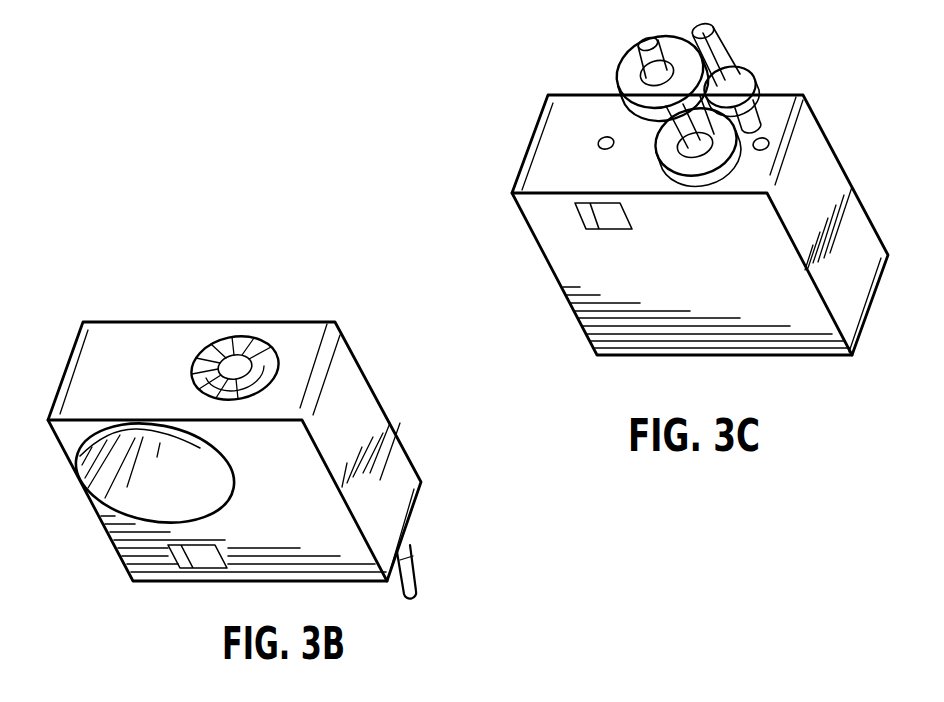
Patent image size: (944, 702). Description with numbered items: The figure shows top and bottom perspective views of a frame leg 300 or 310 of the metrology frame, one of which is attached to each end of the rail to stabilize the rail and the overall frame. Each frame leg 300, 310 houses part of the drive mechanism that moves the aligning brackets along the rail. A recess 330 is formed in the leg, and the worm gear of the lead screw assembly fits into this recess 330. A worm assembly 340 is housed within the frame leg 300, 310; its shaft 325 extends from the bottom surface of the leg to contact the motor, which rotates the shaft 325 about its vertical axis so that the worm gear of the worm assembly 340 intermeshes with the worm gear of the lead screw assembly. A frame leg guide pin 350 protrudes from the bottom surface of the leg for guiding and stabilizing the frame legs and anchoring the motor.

In FIG. 3B, the frame leg 300 is at (291, 451).
In FIG. 3B, the frame leg 310 is at (411, 418).
In FIG. 3C, the shaft 325 is at (643, 43).
In FIG. 3B, the recess 330 is at (125, 467).
In FIG. 3B, the worm assembly 340 is at (249, 358).
In FIG. 3C, the worm assembly 340 is at (672, 160).
In FIG. 3B, the frame leg guide pin 350 is at (418, 578).
In FIG. 3C, the frame leg guide pin 350 is at (757, 84).